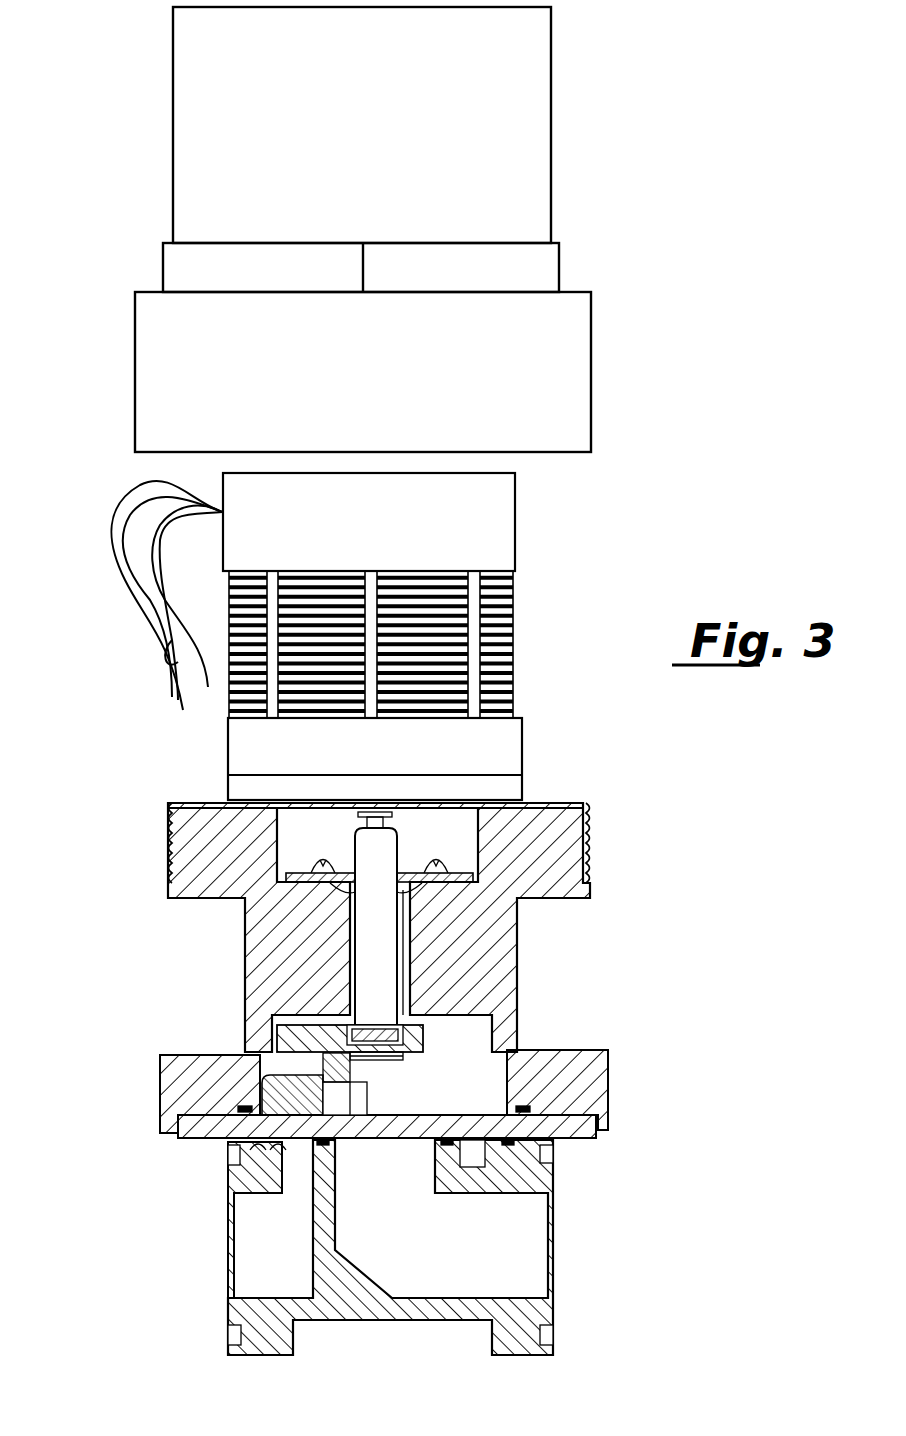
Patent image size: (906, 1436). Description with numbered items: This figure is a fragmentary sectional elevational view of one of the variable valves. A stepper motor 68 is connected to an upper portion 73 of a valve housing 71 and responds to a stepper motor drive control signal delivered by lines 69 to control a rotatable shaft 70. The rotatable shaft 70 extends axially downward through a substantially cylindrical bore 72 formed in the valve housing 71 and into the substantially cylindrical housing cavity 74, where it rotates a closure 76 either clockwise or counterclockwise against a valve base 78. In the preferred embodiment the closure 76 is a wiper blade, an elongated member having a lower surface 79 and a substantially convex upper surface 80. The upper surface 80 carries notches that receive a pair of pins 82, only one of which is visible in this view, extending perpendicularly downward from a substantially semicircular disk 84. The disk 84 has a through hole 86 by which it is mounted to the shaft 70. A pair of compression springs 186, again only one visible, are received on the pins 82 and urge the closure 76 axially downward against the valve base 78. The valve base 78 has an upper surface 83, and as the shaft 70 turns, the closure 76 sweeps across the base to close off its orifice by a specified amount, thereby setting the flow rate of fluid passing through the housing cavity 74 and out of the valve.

The stepper motor 68 is at (507, 532).
The lines 69 is at (127, 562).
The rotatable shaft 70 is at (392, 833).
The valve housing 71 is at (287, 965).
The cylindrical bore 72 is at (413, 892).
The upper portion 73 is at (273, 808).
The housing cavity 74 is at (497, 1098).
The closure 76 is at (265, 1088).
The valve base 78 is at (575, 1137).
The lower surface 79 is at (280, 1118).
The upper surface 80 is at (277, 1062).
The pins 82 is at (352, 1060).
The upper surface 83 is at (245, 1116).
The semicircular disk 84 is at (277, 1035).
The through hole 86 is at (378, 1025).
The compression springs 186 is at (348, 1085).